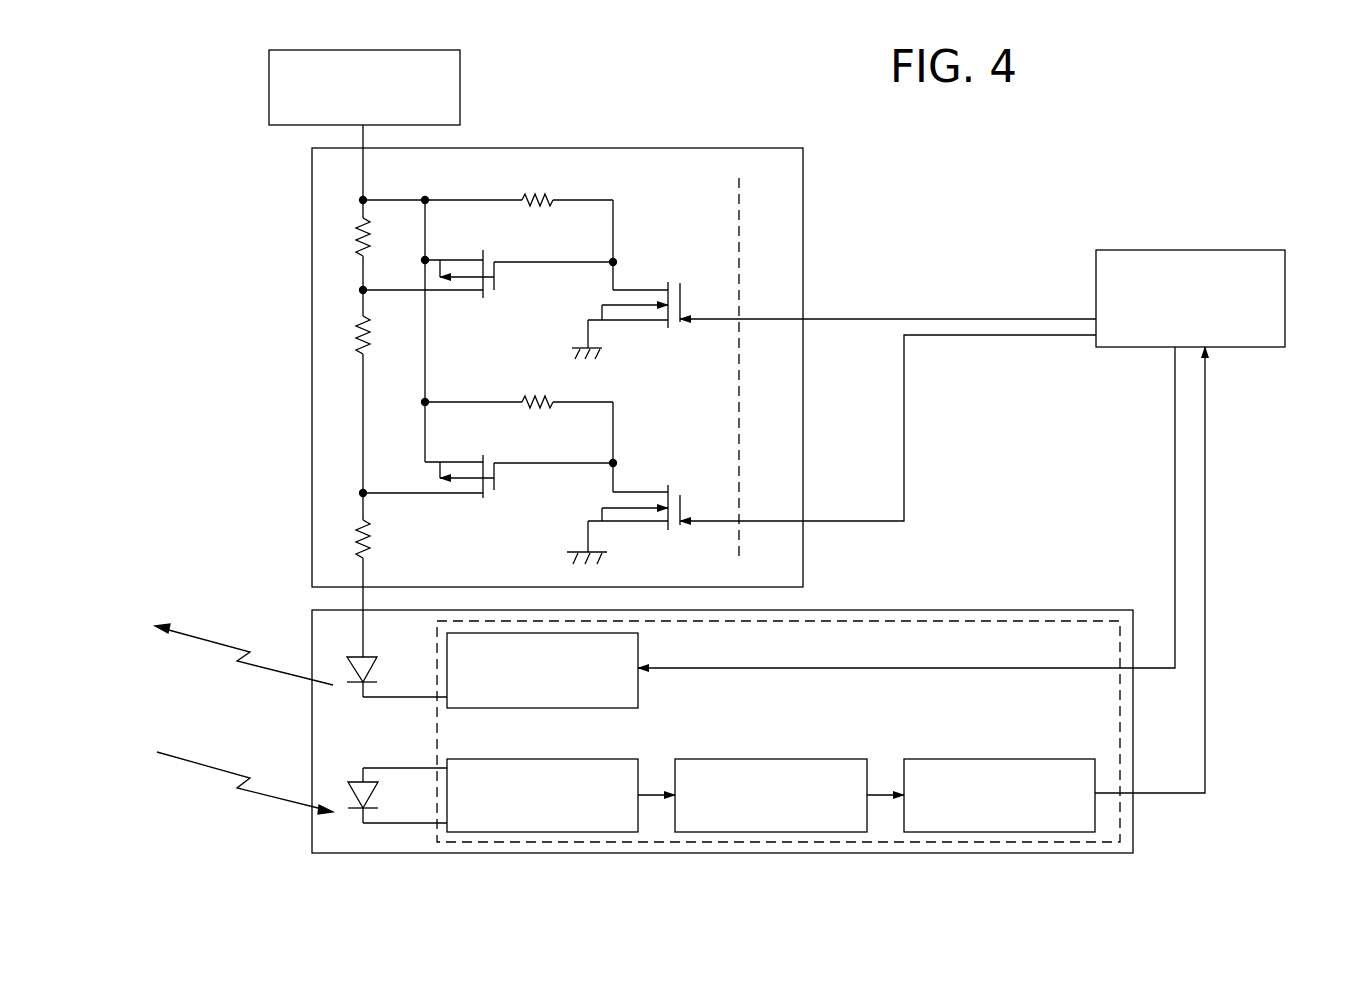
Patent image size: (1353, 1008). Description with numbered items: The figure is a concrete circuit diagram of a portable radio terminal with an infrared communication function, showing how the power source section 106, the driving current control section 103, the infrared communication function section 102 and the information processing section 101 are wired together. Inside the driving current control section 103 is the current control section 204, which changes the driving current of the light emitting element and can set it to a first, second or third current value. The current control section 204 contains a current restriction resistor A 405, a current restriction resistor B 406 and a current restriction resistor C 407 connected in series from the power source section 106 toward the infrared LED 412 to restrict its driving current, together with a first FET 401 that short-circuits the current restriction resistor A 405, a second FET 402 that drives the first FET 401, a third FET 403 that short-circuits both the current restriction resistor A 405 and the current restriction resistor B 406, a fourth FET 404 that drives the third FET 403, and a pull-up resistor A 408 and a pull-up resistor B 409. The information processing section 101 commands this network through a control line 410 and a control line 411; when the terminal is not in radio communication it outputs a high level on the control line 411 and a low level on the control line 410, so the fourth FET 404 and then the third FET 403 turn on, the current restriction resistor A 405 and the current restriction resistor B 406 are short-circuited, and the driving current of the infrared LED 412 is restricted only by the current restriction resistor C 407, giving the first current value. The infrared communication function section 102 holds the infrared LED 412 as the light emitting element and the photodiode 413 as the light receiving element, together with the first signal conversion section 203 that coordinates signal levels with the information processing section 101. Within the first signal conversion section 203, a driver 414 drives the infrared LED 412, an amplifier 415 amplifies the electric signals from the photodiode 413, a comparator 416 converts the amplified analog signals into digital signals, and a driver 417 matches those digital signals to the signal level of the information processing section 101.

The information processing section 101 is at (1285, 272).
The infrared communication function section 102 is at (1028, 610).
The driving current control section 103 is at (803, 163).
The power source section 106 is at (460, 93).
The first signal conversion section 203 is at (963, 621).
The current control section 204 is at (739, 222).
The first FET 401 is at (488, 256).
The second FET 402 is at (676, 288).
The third FET 403 is at (440, 471).
The fourth FET 404 is at (676, 490).
The current restriction resistor A 405 is at (355, 234).
The current restriction resistor B 406 is at (355, 334).
The current restriction resistor C 407 is at (355, 534).
The pull-up resistor A 408 is at (541, 196).
The pull-up resistor B 409 is at (541, 398).
The control line 410 is at (930, 316).
The control line 411 is at (845, 518).
The infrared LED 412 is at (361, 683).
The photodiode 413 is at (361, 808).
The driver 414 is at (540, 708).
The amplifier 415 is at (548, 758).
The comparator 416 is at (768, 758).
The driver 417 is at (972, 758).